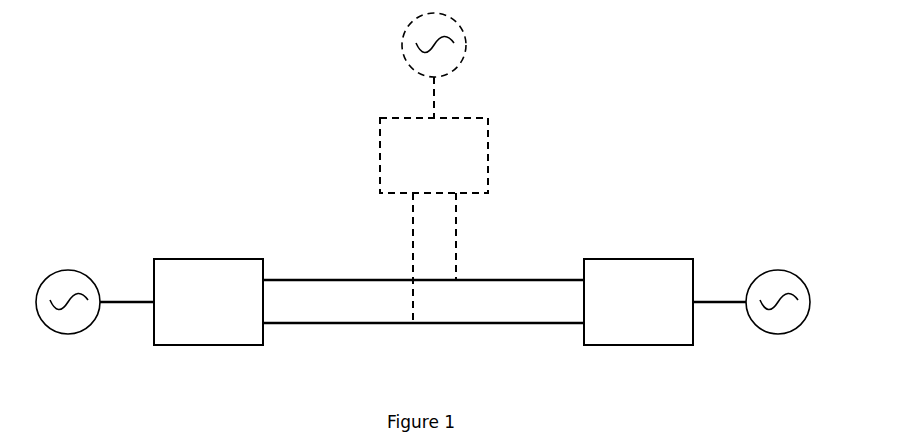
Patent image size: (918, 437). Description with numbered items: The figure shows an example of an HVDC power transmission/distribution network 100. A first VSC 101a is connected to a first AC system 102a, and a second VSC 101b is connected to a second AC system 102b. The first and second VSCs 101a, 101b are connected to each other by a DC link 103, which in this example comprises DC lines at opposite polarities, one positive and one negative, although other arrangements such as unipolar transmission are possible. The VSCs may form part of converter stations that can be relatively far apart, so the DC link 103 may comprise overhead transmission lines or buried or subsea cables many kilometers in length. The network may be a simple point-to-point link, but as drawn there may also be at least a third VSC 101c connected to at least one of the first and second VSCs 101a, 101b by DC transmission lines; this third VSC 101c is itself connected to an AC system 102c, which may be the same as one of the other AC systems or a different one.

The HVDC power transmission/distribution network 100 is at (180, 70).
The first VSC 101a is at (232, 316).
The second VSC 101b is at (661, 316).
The third VSC 101c is at (458, 168).
The first AC system 102a is at (68, 270).
The second AC system 102b is at (773, 270).
The AC system 102c is at (467, 52).
The DC link 103 is at (340, 323).